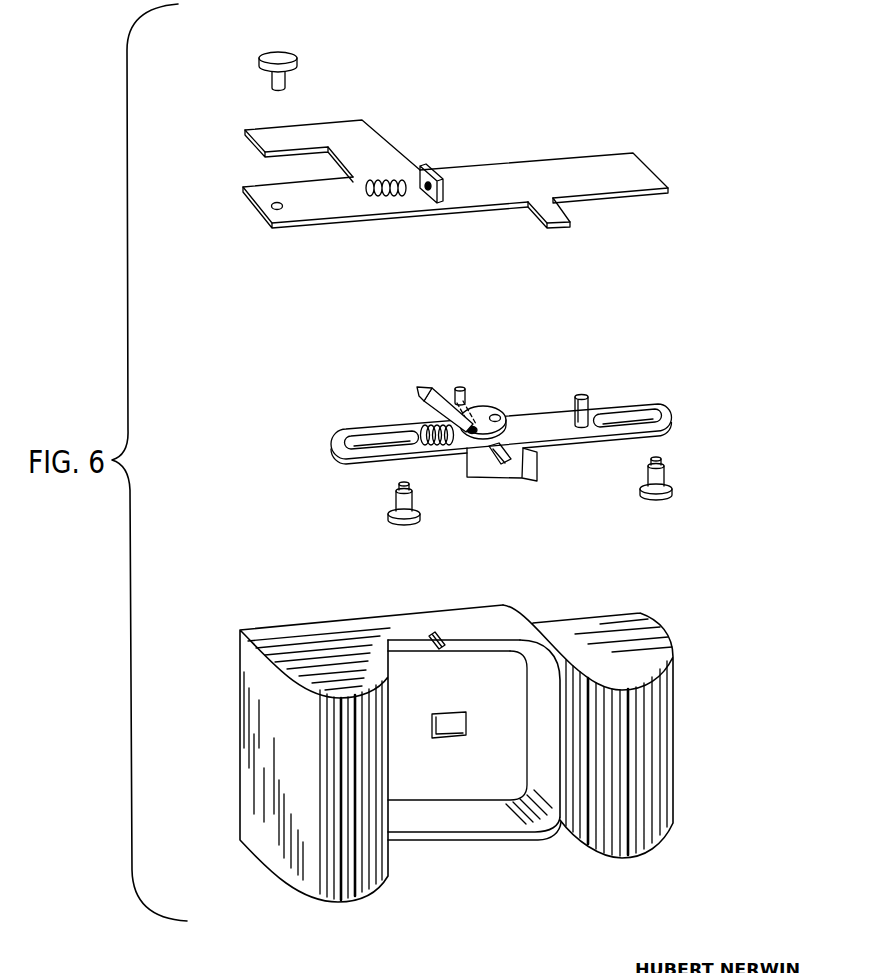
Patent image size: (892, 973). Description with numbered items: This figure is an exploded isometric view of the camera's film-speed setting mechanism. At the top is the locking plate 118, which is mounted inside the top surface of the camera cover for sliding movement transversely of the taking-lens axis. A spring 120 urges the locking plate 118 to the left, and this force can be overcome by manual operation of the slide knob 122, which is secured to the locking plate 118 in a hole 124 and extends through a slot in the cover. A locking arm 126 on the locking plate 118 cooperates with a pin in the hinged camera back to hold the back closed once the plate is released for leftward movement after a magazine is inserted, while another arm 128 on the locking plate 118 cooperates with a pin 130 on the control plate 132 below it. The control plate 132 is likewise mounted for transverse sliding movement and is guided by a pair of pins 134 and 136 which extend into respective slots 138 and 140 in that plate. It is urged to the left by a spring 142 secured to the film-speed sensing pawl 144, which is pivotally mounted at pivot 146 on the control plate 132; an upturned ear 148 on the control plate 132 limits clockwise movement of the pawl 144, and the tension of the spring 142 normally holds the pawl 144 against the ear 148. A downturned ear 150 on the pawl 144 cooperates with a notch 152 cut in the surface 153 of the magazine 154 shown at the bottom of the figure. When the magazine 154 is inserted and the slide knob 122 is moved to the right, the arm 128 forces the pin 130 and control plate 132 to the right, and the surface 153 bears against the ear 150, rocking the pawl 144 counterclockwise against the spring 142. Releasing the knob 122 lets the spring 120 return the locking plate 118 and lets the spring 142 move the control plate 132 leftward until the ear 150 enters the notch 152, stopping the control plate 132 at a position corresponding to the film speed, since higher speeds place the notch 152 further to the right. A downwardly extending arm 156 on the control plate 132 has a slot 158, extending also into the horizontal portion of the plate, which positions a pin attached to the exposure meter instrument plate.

The locking plate 118 is at (532, 165).
The spring 120 is at (402, 182).
The slide knob 122 is at (258, 61).
The hole 124 is at (270, 207).
The locking arm 126 is at (340, 127).
The arm 128 is at (548, 224).
The pin 130 is at (584, 398).
The control plate 132 is at (582, 448).
The pin 134 is at (418, 520).
The pin 136 is at (673, 494).
The slot 138 is at (340, 480).
The slot 140 is at (638, 412).
The spring 142 is at (432, 428).
The film-speed sensing pawl 144 is at (480, 412).
The pivot 146 is at (503, 415).
The upturned ear 148 is at (460, 388).
The downturned ear 150 is at (418, 388).
The notch 152 is at (440, 632).
The magazine surface 153 is at (500, 637).
The magazine 154 is at (302, 744).
The downwardly extending arm 156 is at (530, 468).
The slot 158 is at (480, 468).